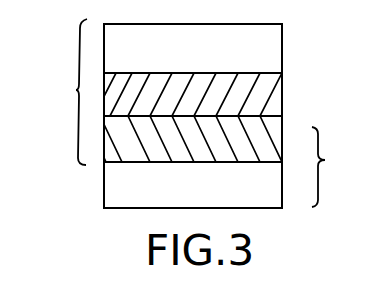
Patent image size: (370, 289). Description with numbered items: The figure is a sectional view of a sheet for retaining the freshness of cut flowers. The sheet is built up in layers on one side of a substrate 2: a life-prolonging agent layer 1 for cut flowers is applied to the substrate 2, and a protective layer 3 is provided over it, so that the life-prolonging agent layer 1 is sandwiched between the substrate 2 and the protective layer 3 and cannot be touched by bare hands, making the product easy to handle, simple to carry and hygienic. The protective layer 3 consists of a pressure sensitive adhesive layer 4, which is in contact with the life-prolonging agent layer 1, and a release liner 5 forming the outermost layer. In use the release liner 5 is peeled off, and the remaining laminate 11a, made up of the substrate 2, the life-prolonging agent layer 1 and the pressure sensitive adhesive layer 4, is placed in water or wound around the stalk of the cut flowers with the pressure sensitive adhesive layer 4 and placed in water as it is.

The life-prolonging agent layer 1 is at (268, 97).
The substrate 2 is at (271, 50).
The protective layer 3 is at (335, 167).
The pressure sensitive adhesive layer 4 is at (270, 143).
The release liner 5 is at (270, 189).
The laminate 11a is at (47, 92).